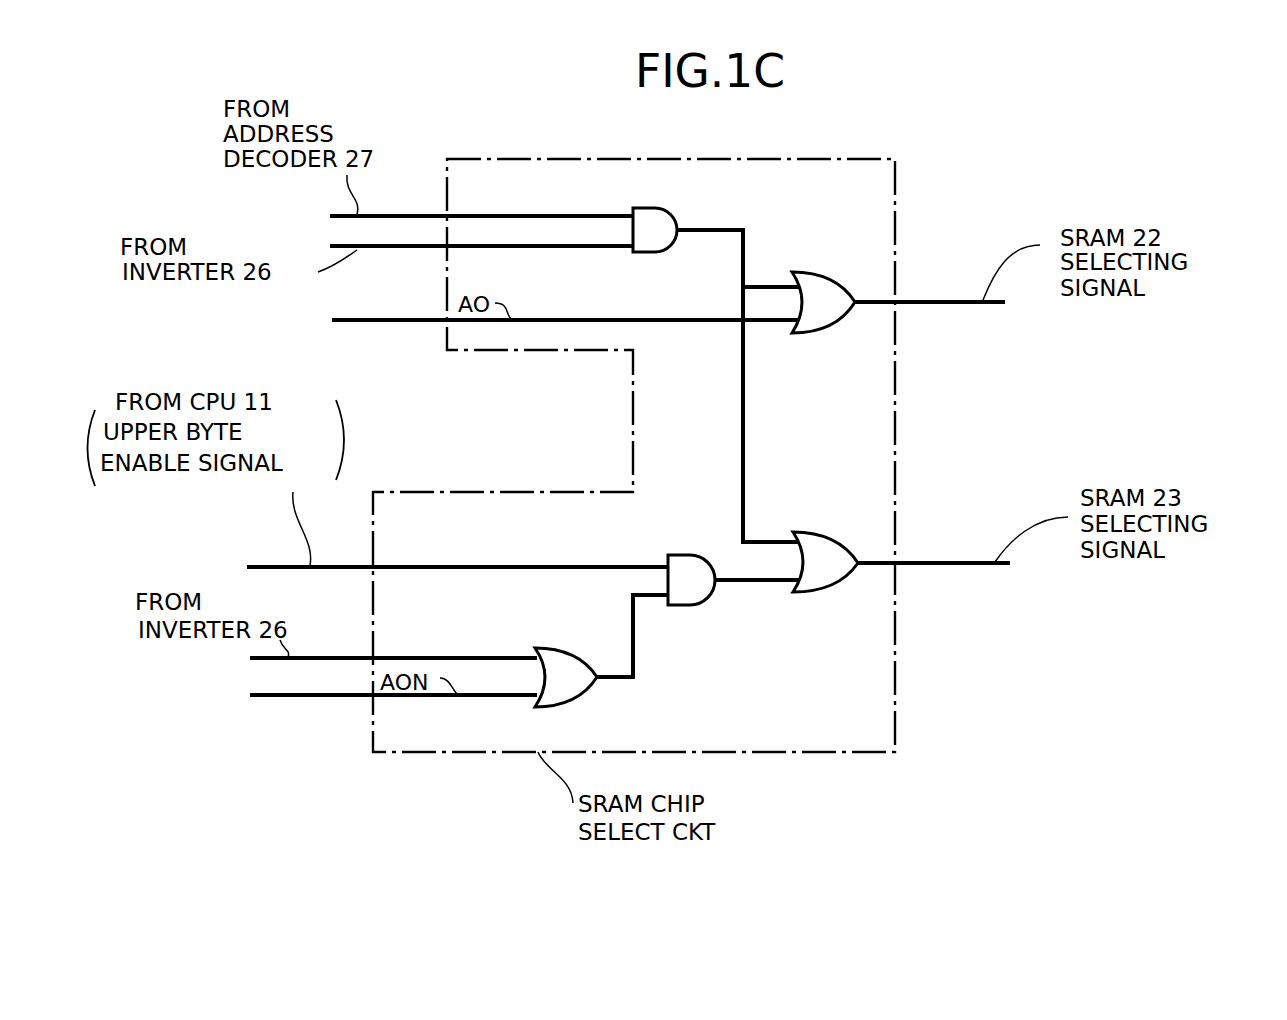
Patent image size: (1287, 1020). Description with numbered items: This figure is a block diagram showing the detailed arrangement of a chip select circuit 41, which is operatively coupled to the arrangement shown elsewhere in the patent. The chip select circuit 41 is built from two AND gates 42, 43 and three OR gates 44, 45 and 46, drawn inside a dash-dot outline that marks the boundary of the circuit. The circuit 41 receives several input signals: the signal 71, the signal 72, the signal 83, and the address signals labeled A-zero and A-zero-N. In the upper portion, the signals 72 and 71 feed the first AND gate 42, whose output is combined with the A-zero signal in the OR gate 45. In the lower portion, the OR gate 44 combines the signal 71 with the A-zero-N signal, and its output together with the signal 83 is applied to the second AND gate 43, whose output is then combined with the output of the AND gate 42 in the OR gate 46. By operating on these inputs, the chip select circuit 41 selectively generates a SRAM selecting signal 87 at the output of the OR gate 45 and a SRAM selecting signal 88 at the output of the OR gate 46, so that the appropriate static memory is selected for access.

The chip select circuit 41 is at (900, 692).
The AND gate 42 is at (668, 208).
The AND gate 43 is at (690, 555).
The OR gate 44 is at (572, 648).
The OR gate 45 is at (815, 272).
The OR gate 46 is at (822, 532).
The signal 71 is at (552, 248).
The signal 72 is at (540, 216).
The signal 83 is at (520, 565).
The SRAM 22 selecting signal 87 is at (940, 305).
The SRAM 23 selecting signal 88 is at (972, 560).